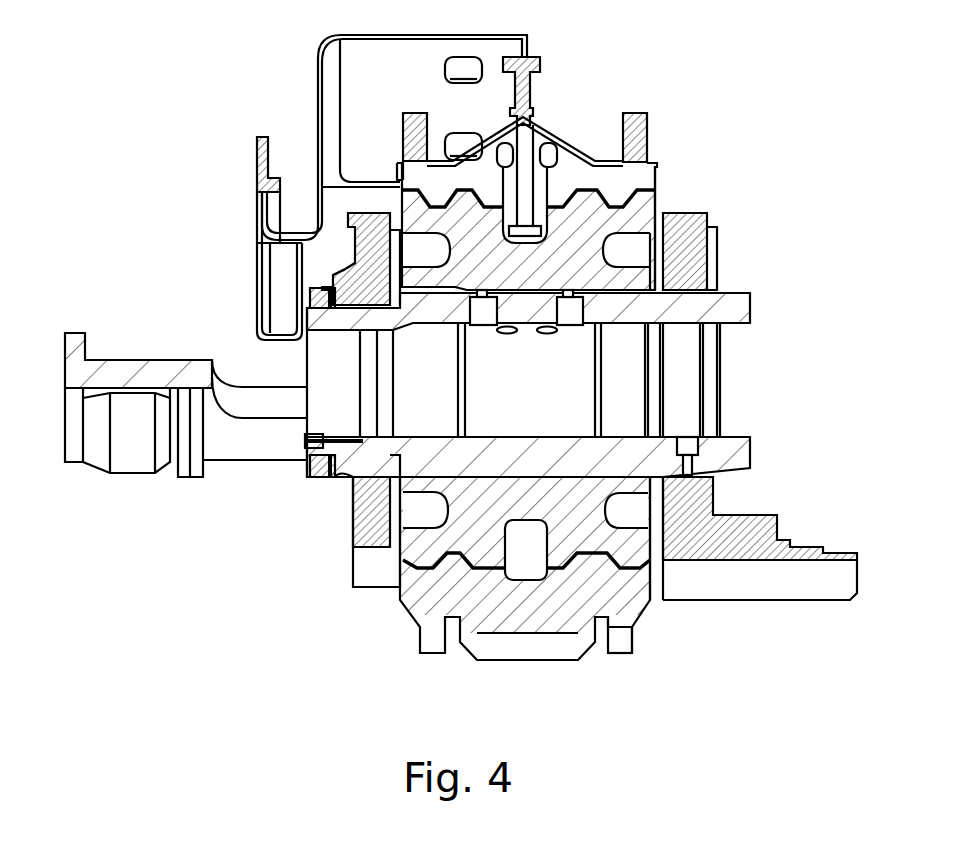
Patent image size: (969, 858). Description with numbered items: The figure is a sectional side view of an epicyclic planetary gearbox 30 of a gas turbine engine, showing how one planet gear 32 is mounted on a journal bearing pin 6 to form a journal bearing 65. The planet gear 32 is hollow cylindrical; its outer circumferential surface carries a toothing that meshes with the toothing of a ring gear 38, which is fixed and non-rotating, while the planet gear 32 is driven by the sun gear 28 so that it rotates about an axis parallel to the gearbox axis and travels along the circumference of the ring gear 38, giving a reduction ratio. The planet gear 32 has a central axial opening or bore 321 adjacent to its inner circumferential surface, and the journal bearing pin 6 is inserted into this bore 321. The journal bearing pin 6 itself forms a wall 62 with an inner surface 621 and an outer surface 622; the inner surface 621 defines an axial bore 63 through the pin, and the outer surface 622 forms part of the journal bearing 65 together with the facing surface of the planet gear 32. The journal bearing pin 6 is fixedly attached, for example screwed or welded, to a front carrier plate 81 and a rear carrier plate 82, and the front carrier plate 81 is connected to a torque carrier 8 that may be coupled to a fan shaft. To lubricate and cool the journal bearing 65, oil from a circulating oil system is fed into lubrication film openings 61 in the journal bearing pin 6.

The journal bearing pin 6 is at (573, 363).
The torque carrier 8 is at (136, 378).
The sun gear 28 is at (609, 614).
The planetary gearbox 30 is at (279, 492).
The planet gear 32 is at (636, 211).
The ring gear 38 is at (646, 176).
The lubrication film openings 61 is at (571, 324).
The wall 62 is at (613, 460).
The axial bore 63 is at (735, 392).
The journal bearing 65 is at (427, 292).
The front carrier plate 81 is at (367, 492).
The rear carrier plate 82 is at (700, 250).
The bore 321 is at (543, 468).
The inner surface 621 is at (523, 435).
The outer surface 622 is at (477, 480).